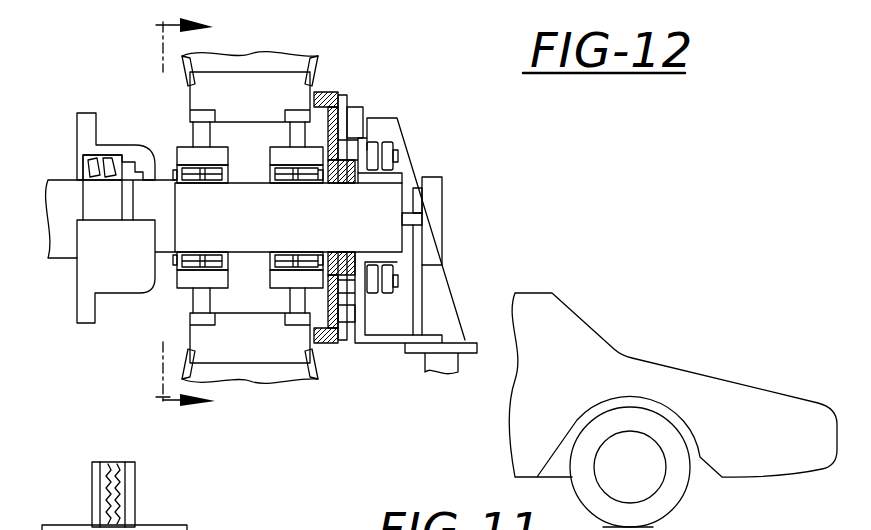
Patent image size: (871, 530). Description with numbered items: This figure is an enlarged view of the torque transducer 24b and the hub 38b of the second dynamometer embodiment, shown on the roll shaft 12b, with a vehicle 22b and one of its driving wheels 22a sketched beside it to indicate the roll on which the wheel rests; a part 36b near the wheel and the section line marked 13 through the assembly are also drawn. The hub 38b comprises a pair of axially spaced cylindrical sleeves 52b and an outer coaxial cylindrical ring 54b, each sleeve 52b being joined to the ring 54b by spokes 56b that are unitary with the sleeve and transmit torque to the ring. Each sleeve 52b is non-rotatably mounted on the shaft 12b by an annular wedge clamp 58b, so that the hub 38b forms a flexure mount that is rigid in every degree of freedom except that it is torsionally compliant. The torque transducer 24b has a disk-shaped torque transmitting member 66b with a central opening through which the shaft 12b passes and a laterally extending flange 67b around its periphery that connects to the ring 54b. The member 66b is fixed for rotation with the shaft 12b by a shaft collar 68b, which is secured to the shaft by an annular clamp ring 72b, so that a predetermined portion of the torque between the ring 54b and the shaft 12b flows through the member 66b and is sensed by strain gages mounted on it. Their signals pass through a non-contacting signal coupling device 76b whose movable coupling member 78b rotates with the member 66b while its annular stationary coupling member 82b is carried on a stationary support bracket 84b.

The shaft 12b is at (360, 216).
The section line 13- 13 is at (202, 216).
The driving wheels 22a is at (683, 512).
The vehicle 22b is at (785, 398).
The torque transducer 24b is at (355, 92).
The support 36b is at (180, 527).
The hub 38b is at (184, 129).
The cylindrical sleeves 52b is at (275, 140).
The outer coaxial cylindrical ring 54b is at (193, 96).
The spokes 56b is at (282, 298).
The annular wedge clamp 58b is at (264, 168).
The torque transmitting member 66b is at (365, 118).
The laterally extending flange 67b is at (340, 84).
The shaft collar 68b is at (395, 182).
The annular clamp ring 72b is at (390, 148).
The non-contacting signal coupling device 76b is at (355, 107).
The movable coupling member 78b is at (352, 287).
The stationary coupling member 82b is at (350, 314).
The stationary support bracket 84b is at (434, 272).